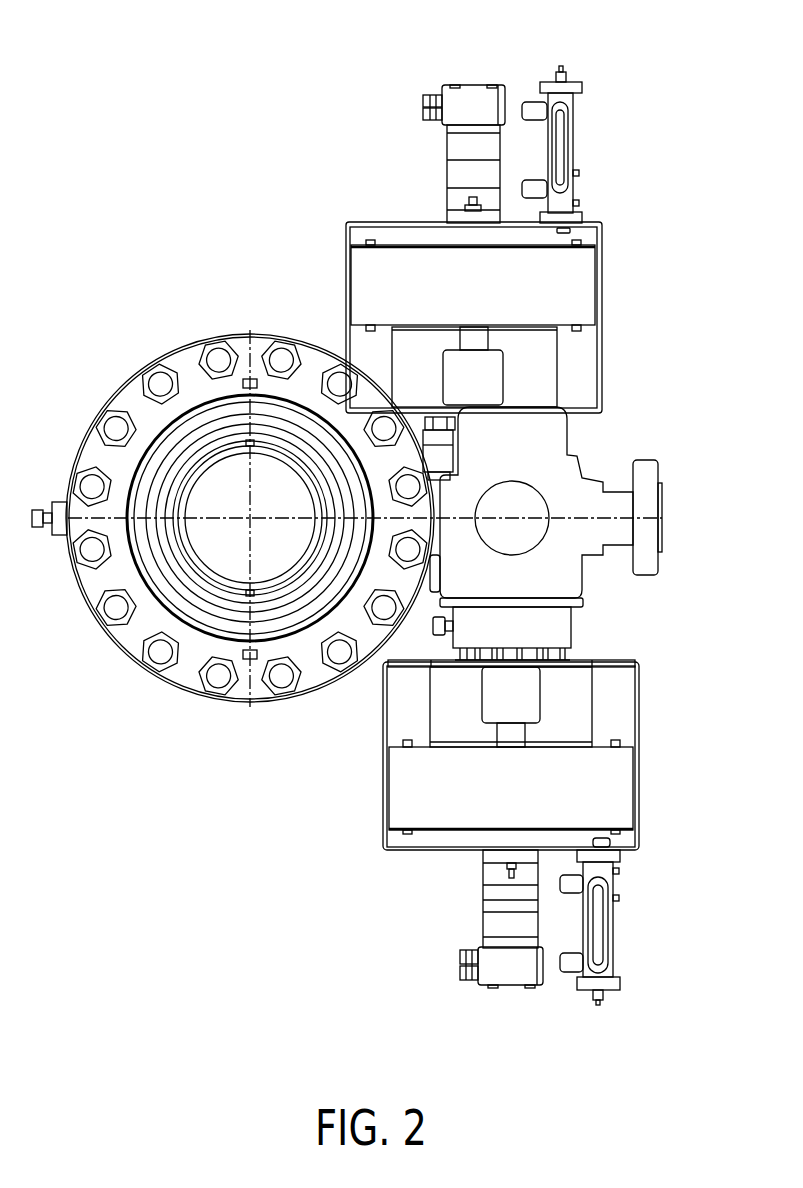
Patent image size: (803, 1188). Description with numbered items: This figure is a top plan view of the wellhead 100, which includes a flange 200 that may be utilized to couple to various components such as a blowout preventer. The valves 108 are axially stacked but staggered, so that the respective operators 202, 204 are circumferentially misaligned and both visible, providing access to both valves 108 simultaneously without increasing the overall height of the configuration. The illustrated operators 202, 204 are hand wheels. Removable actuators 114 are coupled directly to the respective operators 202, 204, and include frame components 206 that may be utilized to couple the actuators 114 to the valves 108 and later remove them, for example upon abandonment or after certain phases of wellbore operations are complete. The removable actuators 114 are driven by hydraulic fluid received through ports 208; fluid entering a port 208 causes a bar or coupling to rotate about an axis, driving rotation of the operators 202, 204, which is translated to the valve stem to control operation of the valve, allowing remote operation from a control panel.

The wellhead 100 is at (118, 157).
The valve 108 is at (543, 622).
The removable actuator 114 is at (420, 190).
The flange 200 is at (98, 445).
The operator 202 is at (562, 295).
The operator 204 is at (612, 785).
The frame component 206 is at (348, 243).
The port 208 is at (435, 92).